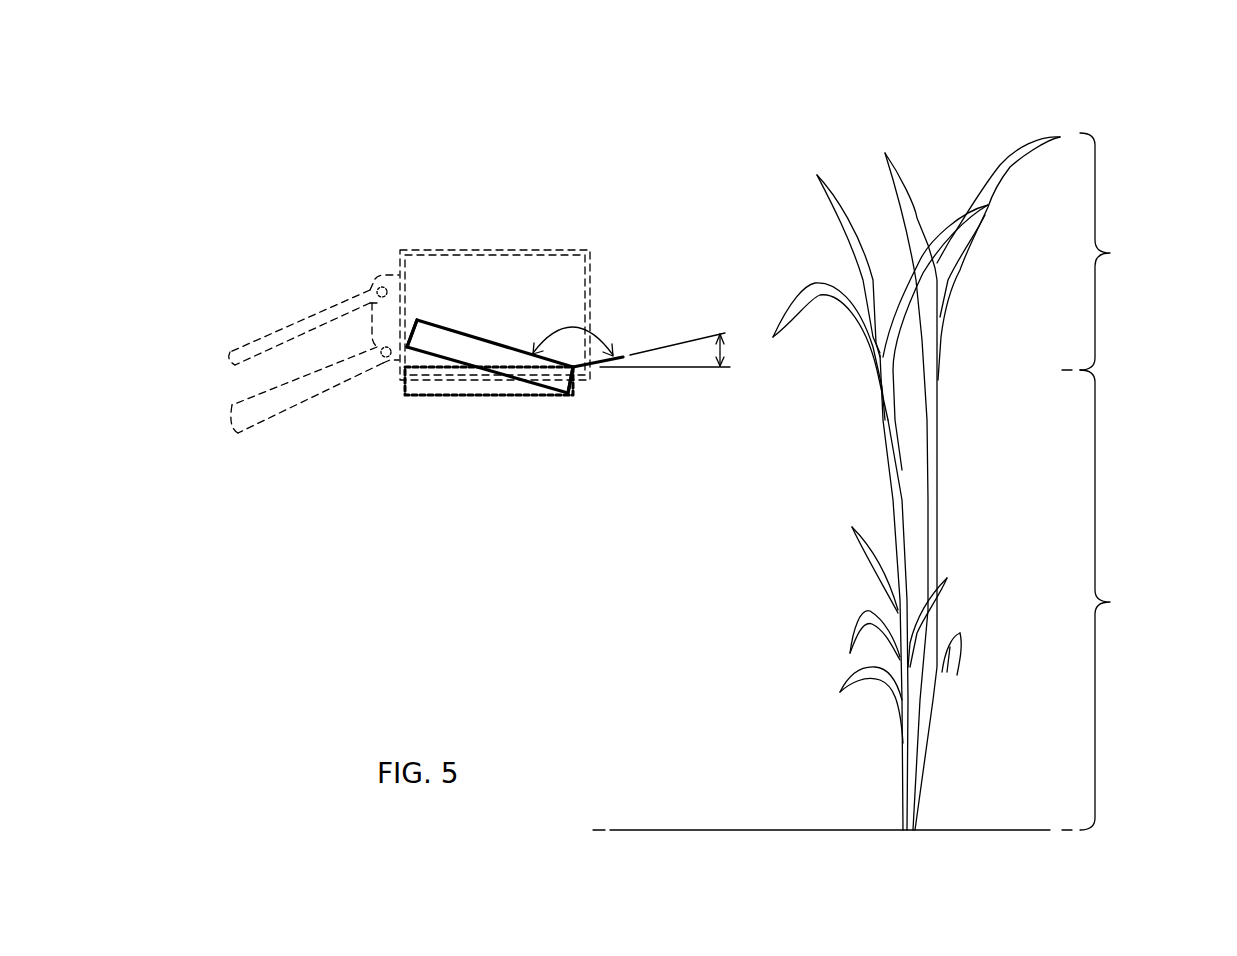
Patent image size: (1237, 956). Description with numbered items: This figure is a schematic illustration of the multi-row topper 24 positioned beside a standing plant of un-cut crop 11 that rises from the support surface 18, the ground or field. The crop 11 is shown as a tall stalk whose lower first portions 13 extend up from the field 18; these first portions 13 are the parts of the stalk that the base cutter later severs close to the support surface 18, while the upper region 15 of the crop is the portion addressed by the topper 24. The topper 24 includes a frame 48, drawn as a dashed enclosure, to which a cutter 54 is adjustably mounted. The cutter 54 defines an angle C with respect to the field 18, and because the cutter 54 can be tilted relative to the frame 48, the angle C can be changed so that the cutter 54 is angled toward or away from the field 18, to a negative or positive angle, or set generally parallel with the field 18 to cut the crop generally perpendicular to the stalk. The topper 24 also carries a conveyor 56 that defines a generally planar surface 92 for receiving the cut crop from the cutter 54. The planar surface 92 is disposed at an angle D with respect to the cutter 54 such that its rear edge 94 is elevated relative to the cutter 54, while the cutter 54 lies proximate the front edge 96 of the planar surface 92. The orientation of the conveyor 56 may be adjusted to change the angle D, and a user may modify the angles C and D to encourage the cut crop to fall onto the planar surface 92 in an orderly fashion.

The un-cut crop 11 is at (1078, 125).
The first portions of the crop 13 is at (1109, 600).
The upper canopy portion of plant 15 is at (1101, 251).
The support surface 18 is at (682, 830).
The topper 24 is at (448, 186).
The frame 48 is at (533, 250).
The cutter 54 is at (593, 367).
The conveyor 56 is at (458, 343).
The planar surface 92 is at (483, 333).
The rear edge 94 is at (415, 318).
The front edge 96 is at (577, 377).
The angle C is at (718, 350).
The angle D is at (570, 327).